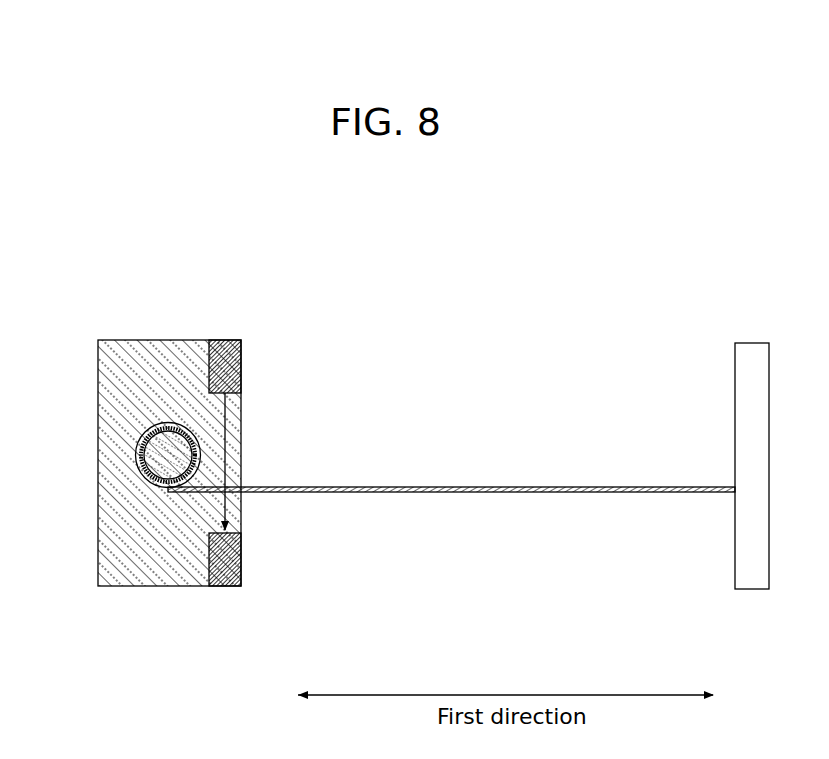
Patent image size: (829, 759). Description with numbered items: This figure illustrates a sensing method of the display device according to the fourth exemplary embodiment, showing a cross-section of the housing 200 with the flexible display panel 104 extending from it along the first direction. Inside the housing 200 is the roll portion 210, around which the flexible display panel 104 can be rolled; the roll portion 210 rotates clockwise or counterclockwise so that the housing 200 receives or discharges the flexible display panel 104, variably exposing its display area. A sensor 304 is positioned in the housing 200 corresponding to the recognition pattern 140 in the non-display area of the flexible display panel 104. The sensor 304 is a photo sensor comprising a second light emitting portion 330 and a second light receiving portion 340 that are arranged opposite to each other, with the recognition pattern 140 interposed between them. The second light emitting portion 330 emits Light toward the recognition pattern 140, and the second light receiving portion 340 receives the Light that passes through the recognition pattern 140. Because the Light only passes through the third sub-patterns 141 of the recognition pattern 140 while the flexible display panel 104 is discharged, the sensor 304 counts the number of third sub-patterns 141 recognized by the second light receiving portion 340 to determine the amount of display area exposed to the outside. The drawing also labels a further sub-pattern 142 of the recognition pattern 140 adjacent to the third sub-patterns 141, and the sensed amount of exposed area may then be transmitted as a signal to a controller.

The housing 200 is at (155, 365).
The roll portion 210 is at (160, 457).
The second light emitting portion 330 is at (243, 358).
The second light receiving portion 340 is at (225, 588).
The sensor 304 is at (245, 563).
The flexible display panel 104 is at (578, 484).
The recognition pattern 140 is at (455, 425).
The third sub-pattern 141 is at (375, 487).
The cladding 142 is at (417, 487).
The light Light is at (230, 435).